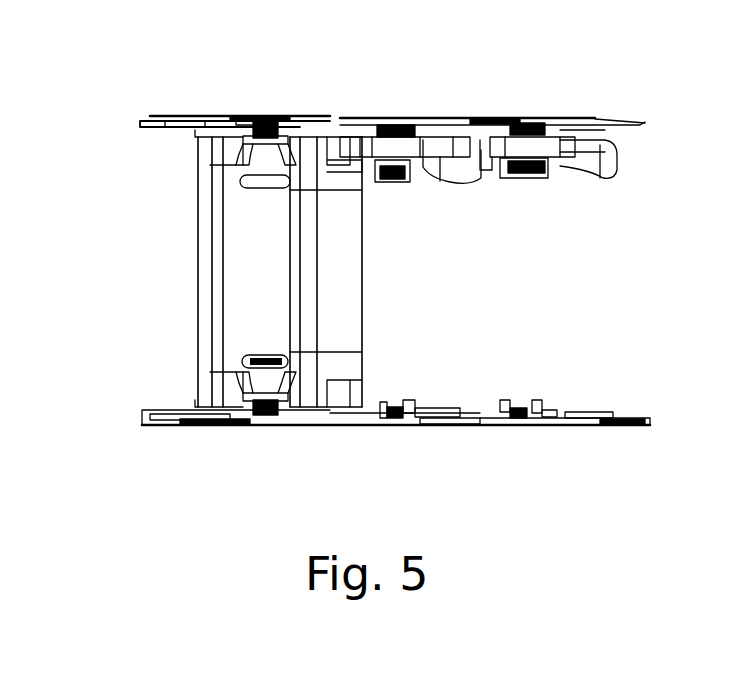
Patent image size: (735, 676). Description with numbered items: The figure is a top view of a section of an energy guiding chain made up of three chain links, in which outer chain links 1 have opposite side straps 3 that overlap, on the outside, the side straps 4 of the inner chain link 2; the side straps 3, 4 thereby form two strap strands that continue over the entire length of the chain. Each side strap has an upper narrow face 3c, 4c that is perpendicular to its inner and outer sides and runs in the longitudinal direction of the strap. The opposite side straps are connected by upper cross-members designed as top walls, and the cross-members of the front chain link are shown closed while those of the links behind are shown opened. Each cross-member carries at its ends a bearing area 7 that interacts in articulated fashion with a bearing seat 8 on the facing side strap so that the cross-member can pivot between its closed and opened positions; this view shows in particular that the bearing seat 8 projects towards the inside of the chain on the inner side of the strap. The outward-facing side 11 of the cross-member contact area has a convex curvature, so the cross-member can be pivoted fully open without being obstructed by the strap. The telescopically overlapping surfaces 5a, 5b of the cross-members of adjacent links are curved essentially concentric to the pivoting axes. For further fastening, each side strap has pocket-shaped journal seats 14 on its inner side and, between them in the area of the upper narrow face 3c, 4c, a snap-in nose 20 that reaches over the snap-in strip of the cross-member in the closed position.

The outer chain link 1 is at (259, 100).
The inner chain link 2 is at (394, 108).
The side strap 3 is at (161, 112).
The upper narrow face 3c is at (247, 120).
The side strap 4 is at (160, 436).
The upper narrow face 4c is at (248, 420).
The telescopically overlapping surface 5a is at (448, 168).
The telescopically overlapping surface 5b is at (343, 172).
The bearing area 7 is at (396, 197).
The bearing seat 8 is at (388, 386).
The side of contact area 11 is at (247, 258).
The journal seat 14 is at (513, 403).
The snap-in nose 20 is at (398, 403).